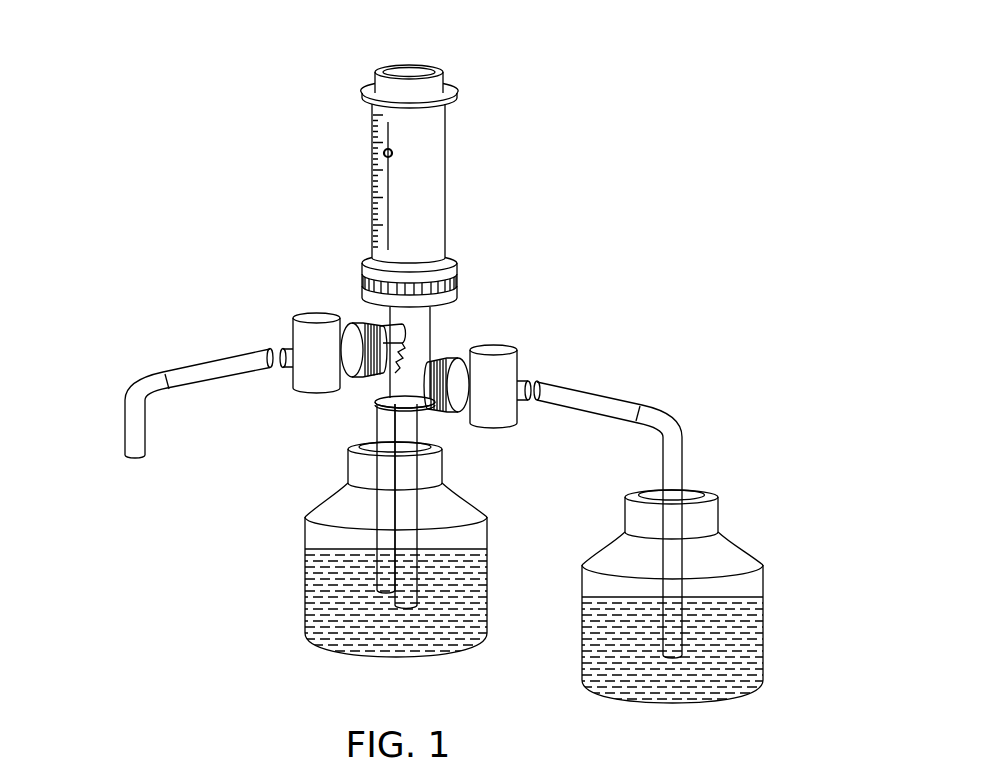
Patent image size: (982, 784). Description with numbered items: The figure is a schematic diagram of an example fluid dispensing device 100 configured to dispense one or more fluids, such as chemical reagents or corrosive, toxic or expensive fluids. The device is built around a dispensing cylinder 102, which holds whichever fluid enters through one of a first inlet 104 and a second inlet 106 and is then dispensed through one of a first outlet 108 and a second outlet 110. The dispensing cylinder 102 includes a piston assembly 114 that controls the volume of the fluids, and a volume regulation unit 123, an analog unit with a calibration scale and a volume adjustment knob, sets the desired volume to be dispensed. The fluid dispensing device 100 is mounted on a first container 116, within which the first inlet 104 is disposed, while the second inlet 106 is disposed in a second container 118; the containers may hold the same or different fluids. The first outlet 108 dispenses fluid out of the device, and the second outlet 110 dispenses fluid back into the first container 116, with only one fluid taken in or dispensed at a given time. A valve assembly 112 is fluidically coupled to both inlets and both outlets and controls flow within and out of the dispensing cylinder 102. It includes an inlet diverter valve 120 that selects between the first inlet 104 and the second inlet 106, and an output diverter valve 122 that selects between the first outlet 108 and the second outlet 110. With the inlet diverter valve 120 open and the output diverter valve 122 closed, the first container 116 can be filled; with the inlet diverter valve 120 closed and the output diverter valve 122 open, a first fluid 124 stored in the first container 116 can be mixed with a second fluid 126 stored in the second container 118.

The fluid dispensing device 100 is at (636, 80).
The dispensing cylinder 102 is at (446, 205).
The first inlet 104 is at (420, 418).
The second inlet 106 is at (684, 462).
The first outlet 108 is at (125, 420).
The second outlet 110 is at (378, 410).
The valve assembly 112 is at (463, 342).
The piston assembly 114 is at (417, 68).
The first container 116 is at (307, 513).
The second container 118 is at (755, 548).
The inlet diverter valve 120 is at (517, 362).
The output diverter valve 122 is at (292, 325).
The volume regulation unit 123 is at (391, 153).
The first fluid 124 is at (316, 585).
The second fluid 126 is at (743, 638).